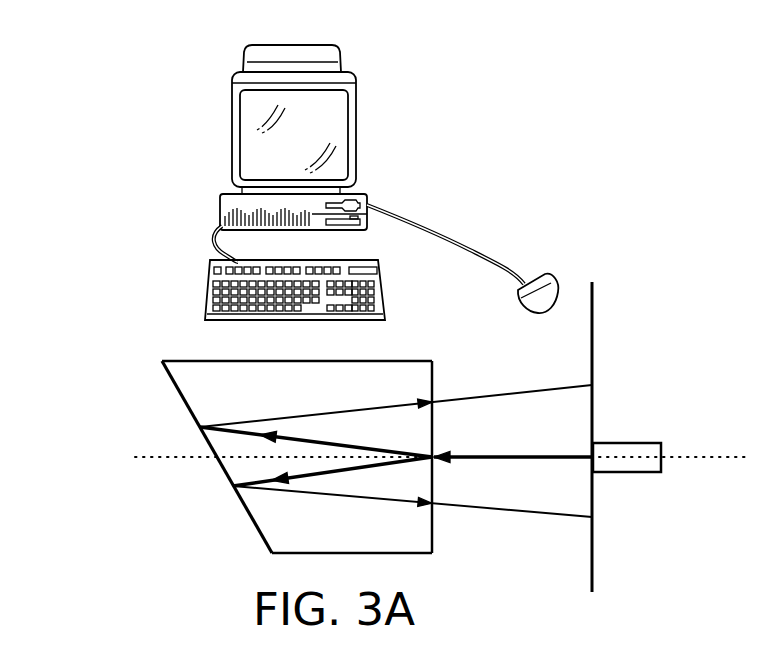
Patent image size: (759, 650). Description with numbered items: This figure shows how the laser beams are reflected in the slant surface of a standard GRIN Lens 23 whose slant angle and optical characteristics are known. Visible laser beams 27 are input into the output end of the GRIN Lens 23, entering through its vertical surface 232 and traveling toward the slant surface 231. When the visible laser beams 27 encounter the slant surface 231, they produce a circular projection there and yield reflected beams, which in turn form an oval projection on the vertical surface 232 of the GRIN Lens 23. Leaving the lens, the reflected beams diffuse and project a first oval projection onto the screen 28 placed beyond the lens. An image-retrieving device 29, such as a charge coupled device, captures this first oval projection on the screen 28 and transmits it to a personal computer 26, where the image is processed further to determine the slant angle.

The GRIN Lens 23 is at (416, 361).
The slant surface 231 is at (173, 381).
The vertical surface 232 is at (433, 373).
The personal computer 26 is at (232, 117).
The visible laser beams 27 is at (492, 452).
The screen 28 is at (592, 309).
The image-retrieving device 29 is at (543, 274).